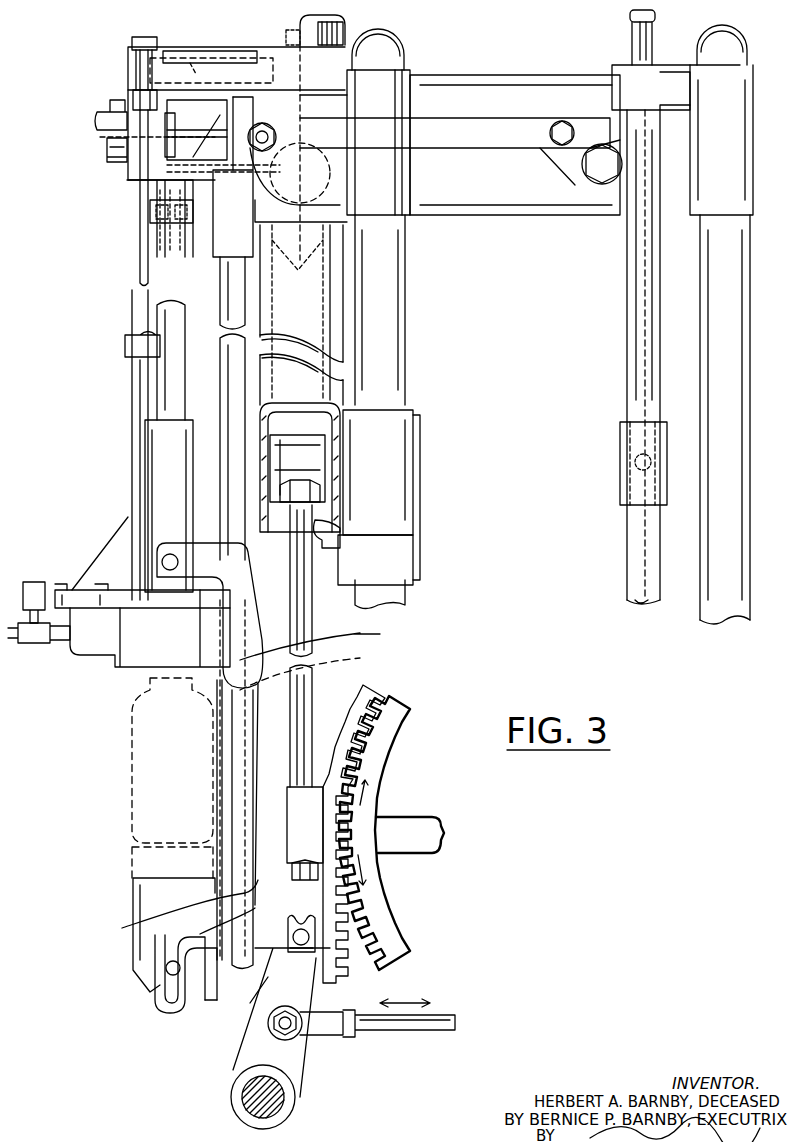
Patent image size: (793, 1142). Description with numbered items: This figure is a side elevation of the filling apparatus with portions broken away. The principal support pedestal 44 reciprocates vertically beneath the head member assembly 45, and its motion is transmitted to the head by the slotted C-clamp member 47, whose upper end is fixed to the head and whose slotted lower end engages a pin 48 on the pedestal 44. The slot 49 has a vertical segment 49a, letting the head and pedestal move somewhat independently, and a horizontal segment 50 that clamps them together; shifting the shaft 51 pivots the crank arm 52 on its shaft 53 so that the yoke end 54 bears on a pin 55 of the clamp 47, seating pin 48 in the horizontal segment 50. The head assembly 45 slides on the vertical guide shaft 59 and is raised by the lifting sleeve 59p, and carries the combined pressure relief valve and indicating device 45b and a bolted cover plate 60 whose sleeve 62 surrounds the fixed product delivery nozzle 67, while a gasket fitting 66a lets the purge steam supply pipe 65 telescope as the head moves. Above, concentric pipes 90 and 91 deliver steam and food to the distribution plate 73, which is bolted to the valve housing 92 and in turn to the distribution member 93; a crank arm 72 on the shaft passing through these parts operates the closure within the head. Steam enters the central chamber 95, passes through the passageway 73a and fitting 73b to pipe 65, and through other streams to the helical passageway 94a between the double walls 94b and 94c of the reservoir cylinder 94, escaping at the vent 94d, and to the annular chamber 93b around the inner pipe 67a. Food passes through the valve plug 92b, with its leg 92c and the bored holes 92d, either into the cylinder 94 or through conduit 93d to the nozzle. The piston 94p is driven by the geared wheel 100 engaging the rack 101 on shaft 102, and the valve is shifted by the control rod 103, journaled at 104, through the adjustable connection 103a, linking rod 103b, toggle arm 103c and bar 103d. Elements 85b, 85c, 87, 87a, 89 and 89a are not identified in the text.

The principal support pedestal 44 is at (184, 908).
The head member assembly 45 is at (184, 647).
The combined pressure relief valve and pressure indicating device 45b is at (36, 645).
The slotted C-clamp member 47 is at (250, 645).
The pin 48 is at (166, 968).
The slot 49 is at (142, 1031).
The vertical segment 49a is at (208, 1003).
The horizontal segment 50 is at (135, 929).
The shaft 51 is at (402, 1030).
The crank arm 52 is at (297, 1000).
The shaft 53 is at (275, 1115).
The yoke end 54 is at (247, 994).
The pin 55 is at (301, 925).
The vertical guide shaft 59 is at (220, 372).
The lifting sleeve 59p is at (315, 667).
The bolted cover plate 60 is at (80, 590).
The sleeve 62 is at (183, 458).
The purge steam supply pipe 65 is at (140, 265).
The gasket fitting 66a is at (125, 340).
The product delivery nozzle member 67 is at (184, 320).
The inner pipe 67a is at (218, 260).
The crank arm 72 is at (107, 150).
The distribution plate 73 is at (127, 66).
The passageway 73a is at (195, 52).
The fitting 73b is at (132, 100).
The clamp 85b is at (110, 112).
The clamp block 85c is at (196, 130).
The cylinder 87 is at (385, 291).
The cylinder cap 87a is at (398, 30).
The cylinder 89 is at (730, 298).
The cylinder cap 89a is at (740, 32).
The pipe 90 is at (300, 22).
The inlet food conduit 91 is at (286, 32).
The valve housing 92 is at (281, 220).
The valve plug 92b is at (258, 180).
The leg 92c is at (330, 175).
The bored holes 92d is at (318, 50).
The distribution member 93 is at (127, 170).
The annular chamber 93b is at (150, 211).
The conduit 93d is at (193, 220).
The cylinder 94 is at (354, 392).
The helico passageway 94a is at (330, 432).
The cylinder wall 94b is at (332, 420).
The cylinder wall 94c is at (330, 462).
The vent 94d is at (340, 538).
The piston 94p is at (322, 560).
The central passageway chamber 95 is at (378, 142).
The geared wheel 100 is at (384, 766).
The rack 101 is at (330, 800).
The shaft 102 is at (312, 674).
The control rod 103 is at (630, 558).
The adjustable connection 103a is at (620, 460).
The linking rod 103b is at (627, 322).
The toggle arm 103c is at (585, 135).
The bar 103d is at (432, 122).
The journal mounting 104 is at (618, 65).